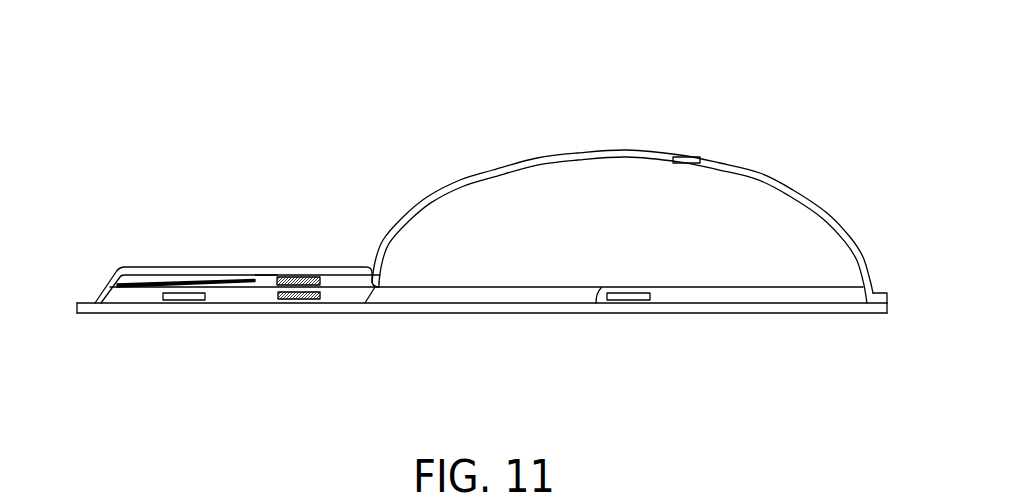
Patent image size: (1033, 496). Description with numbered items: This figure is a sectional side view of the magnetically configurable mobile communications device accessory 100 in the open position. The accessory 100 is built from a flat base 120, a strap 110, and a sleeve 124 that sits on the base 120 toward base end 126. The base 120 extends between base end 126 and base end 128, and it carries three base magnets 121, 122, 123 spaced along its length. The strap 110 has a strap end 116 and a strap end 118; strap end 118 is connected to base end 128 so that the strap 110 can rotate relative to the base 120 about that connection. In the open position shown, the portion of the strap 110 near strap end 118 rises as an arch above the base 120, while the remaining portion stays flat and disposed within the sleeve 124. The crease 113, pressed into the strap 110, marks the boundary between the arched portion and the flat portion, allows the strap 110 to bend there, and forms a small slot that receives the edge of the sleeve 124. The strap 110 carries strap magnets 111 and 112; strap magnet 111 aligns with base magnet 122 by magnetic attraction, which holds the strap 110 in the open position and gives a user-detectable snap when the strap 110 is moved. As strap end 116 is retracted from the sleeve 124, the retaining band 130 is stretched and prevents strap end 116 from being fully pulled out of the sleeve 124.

The magnetically configurable mobile communications device accessory 100 is at (502, 239).
The strap 110 is at (538, 157).
The strap magnet 111 is at (300, 278).
The strap magnet 112 is at (685, 157).
The crease 113 is at (380, 281).
The strap end 116 is at (267, 285).
The strap end 118 is at (872, 273).
The base 120 is at (450, 314).
The base magnet 121 is at (185, 300).
The base magnet 122 is at (300, 300).
The base magnet 123 is at (627, 300).
The sleeve 124 is at (145, 267).
The base end 126 is at (107, 314).
The base end 128 is at (853, 314).
The retaining band 130 is at (198, 277).